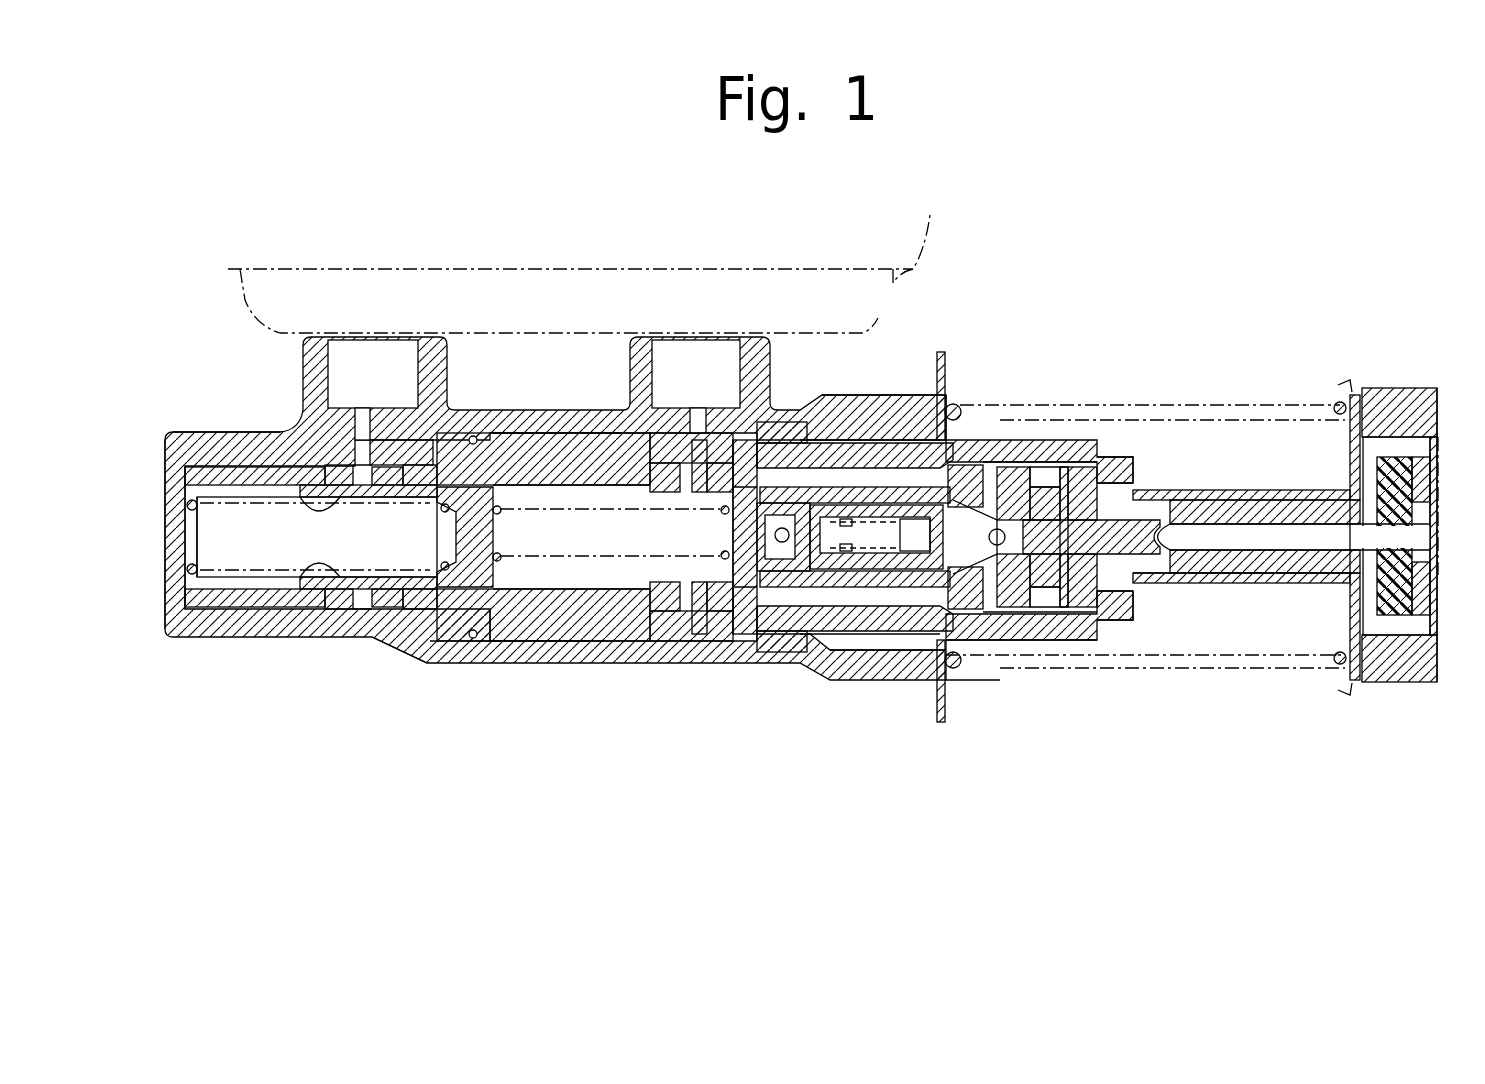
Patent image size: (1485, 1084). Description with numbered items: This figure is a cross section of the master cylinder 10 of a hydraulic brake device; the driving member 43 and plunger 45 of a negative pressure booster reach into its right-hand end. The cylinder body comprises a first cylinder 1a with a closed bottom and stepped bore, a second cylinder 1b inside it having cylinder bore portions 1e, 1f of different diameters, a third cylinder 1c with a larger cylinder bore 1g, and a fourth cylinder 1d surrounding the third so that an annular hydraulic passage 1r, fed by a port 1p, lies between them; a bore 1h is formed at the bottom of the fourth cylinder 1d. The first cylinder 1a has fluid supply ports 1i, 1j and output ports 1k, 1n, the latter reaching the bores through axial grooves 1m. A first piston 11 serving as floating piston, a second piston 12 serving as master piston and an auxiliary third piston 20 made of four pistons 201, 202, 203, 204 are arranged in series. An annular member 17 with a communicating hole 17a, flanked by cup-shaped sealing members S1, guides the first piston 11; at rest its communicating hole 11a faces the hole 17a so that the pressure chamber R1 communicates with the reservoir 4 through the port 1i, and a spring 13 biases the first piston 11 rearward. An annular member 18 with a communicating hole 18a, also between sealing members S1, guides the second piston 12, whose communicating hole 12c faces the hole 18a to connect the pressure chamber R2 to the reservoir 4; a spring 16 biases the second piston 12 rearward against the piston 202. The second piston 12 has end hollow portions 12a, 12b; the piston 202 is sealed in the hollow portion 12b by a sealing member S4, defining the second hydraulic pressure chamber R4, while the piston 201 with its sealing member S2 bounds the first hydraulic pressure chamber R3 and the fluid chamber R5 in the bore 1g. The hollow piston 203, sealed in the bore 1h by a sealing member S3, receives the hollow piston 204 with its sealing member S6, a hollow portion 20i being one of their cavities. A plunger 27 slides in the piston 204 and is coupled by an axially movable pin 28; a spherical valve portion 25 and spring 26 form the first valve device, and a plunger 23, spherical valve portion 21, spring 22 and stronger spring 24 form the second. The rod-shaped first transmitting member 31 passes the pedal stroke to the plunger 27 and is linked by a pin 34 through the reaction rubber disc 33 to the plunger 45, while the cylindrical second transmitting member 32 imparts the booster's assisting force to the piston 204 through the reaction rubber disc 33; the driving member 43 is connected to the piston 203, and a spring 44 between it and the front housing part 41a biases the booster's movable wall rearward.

The first cylinder 1a is at (306, 600).
The second cylinder 1b is at (500, 645).
The third cylinder 1c is at (862, 490).
The fourth cylinder 1d is at (1120, 462).
The cylinder bore portion 1e is at (248, 600).
The cylinder bore portion 1f is at (560, 605).
The cylinder bore 1g is at (835, 640).
The bore 1h is at (1135, 607).
The fluid supply port 1i is at (372, 510).
The fluid supply port 1j is at (700, 470).
The output port 1k is at (192, 625).
The axially extending grooves 1m is at (480, 600).
The output port 1n is at (437, 645).
The port 1p is at (1100, 462).
The annular hydraulic passage 1r is at (930, 425).
The reservoir 4 is at (833, 420).
The master cylinder 10 is at (233, 388).
The first piston 11 is at (525, 505).
The communicating hole 11a is at (227, 550).
The second piston 12 is at (630, 605).
The hollow portion 12a is at (600, 615).
The hollow portion 12b is at (790, 612).
The communicating hole 12c is at (640, 520).
The spring 13 is at (292, 580).
The spring 16 is at (528, 500).
The annular member 17 is at (355, 600).
The communicating hole 17a is at (302, 512).
The annular member 18 is at (690, 634).
The communicating hole 18a is at (660, 520).
The third piston 20 is at (1225, 462).
The hollow portion 20i is at (1348, 660).
The spherical-shaped valve portion 21 is at (785, 468).
The spring 22 is at (780, 422).
The plunger 23 is at (860, 612).
The spring 24 is at (895, 587).
The spherical-shaped valve portion 25 is at (1005, 607).
The spring 26 is at (985, 607).
The plunger 27 is at (1192, 500).
The pin 28 is at (1063, 467).
The first transmitting member 31 is at (1265, 530).
The second transmitting member 32 is at (1390, 445).
The reaction rubber disc 33 is at (1395, 640).
The pin 34 is at (1345, 440).
The front housing part 41a is at (950, 405).
The driving member 43 is at (1348, 385).
The spring 44 is at (1330, 625).
The plunger 45 is at (1443, 445).
The piston 201 is at (1000, 465).
The piston 202 is at (945, 645).
The hollow piston 203 is at (1270, 590).
The hollow piston 204 is at (1190, 600).
The pressure chamber R1 is at (235, 590).
The pressure chamber R2 is at (590, 605).
The first hydraulic pressure chamber R3 is at (905, 615).
The second hydraulic pressure chamber R4 is at (737, 629).
The fluid chamber R5 is at (1040, 607).
The cup-shaped sealing member S1 is at (378, 609).
The cup-shaped sealing member S2 is at (958, 612).
The cup-shaped sealing member S3 is at (1120, 607).
The cup-shaped sealing member S4 is at (770, 629).
The cup-shaped sealing member S6 is at (1062, 607).